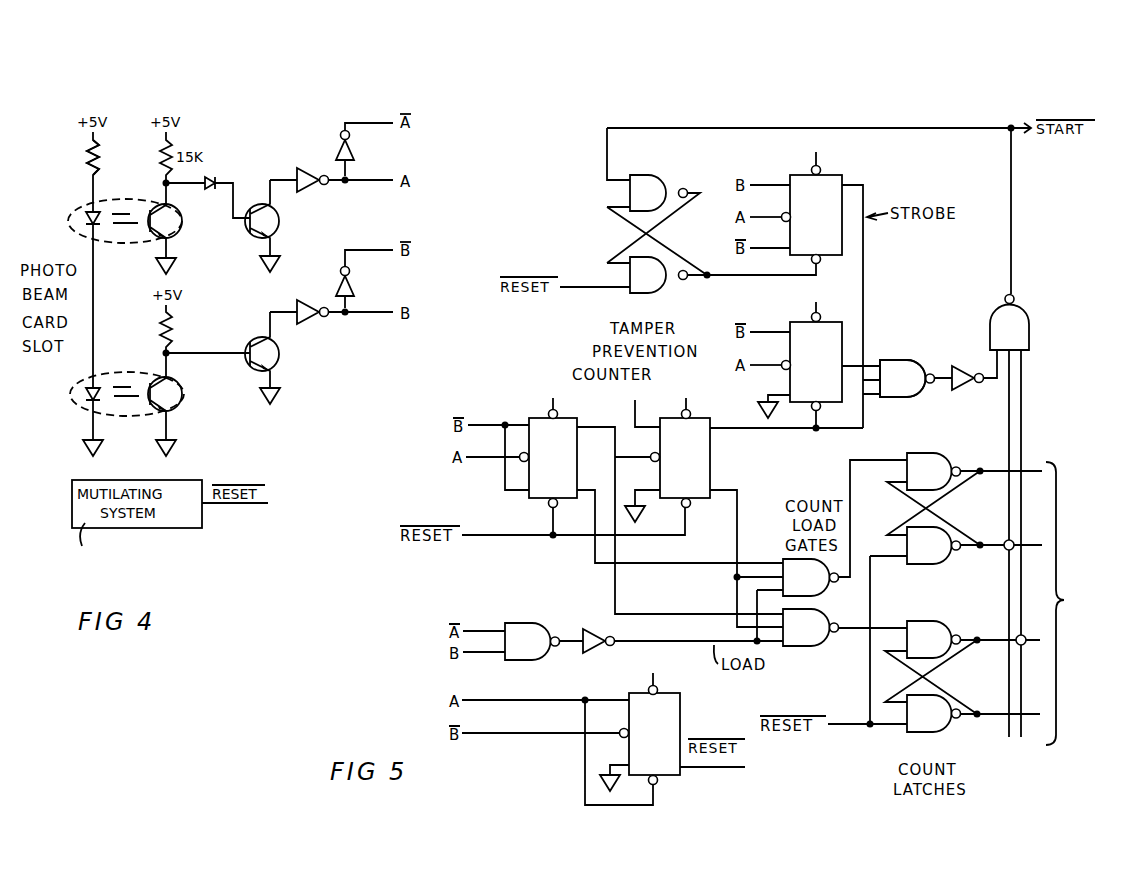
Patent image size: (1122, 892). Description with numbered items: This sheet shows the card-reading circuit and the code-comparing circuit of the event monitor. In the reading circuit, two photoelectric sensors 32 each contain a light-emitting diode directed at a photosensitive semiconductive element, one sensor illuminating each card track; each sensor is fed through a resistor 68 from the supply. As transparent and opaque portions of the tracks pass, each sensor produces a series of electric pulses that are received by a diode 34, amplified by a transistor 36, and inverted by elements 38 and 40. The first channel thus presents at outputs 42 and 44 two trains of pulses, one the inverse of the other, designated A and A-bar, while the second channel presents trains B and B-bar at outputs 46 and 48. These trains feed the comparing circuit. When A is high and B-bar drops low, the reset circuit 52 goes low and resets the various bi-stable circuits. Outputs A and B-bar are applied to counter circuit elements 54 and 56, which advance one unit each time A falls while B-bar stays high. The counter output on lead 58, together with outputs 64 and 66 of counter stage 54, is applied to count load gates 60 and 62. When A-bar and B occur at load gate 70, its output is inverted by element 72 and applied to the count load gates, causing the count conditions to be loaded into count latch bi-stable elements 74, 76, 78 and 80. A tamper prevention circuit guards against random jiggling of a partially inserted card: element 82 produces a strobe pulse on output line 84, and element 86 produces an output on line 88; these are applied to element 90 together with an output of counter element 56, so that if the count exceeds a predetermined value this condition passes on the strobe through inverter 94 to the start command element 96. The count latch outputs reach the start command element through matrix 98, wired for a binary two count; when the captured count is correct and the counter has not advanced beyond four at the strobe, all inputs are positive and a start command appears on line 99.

In FIG. 4, the photoelectric sensor 32 is at (88, 204).
In FIG. 4, the diode 34 is at (214, 176).
In FIG. 4, the transistor 36 is at (279, 228).
In FIG. 4, the inverter element 38 is at (307, 168).
In FIG. 4, the inverter element 40 is at (342, 139).
In FIG. 4, the output 42 is at (362, 183).
In FIG. 4, the output 44 is at (353, 123).
In FIG. 4, the output 46 is at (362, 315).
In FIG. 4, the output 48 is at (372, 248).
In FIG. 4, the resistor 68 is at (103, 157).
In FIG. 5, the reset circuit 52 is at (677, 693).
In FIG. 5, the counter circuit element 54 is at (570, 418).
In FIG. 5, the counter circuit element 56 is at (701, 418).
In FIG. 5, the lead 58 is at (737, 508).
In FIG. 5, the count load gate 60 is at (826, 593).
In FIG. 5, the count load gate 62 is at (793, 647).
In FIG. 5, the output of counter stage 64 is at (696, 563).
In FIG. 5, the output of counter stage 66 is at (650, 614).
In FIG. 5, the load gate 70 is at (530, 623).
In FIG. 5, the inverter element 72 is at (593, 628).
In FIG. 5, the count latch bi-stable element 74 is at (928, 453).
In FIG. 5, the count latch bi-stable element 76 is at (920, 565).
In FIG. 5, the count latch bi-stable element 78 is at (926, 621).
In FIG. 5, the count latch bi-stable element 80 is at (926, 733).
In FIG. 5, the strobe element 82 is at (822, 175).
In FIG. 5, the strobe output line 84 is at (863, 262).
In FIG. 5, the tamper prevention element 86 is at (822, 322).
In FIG. 5, the output line 88 is at (886, 360).
In FIG. 5, the gating element 90 is at (904, 360).
In FIG. 5, the inverter 94 is at (968, 385).
In FIG. 5, the start command element 96 is at (1001, 304).
In FIG. 5, the matrix 98 is at (770, 430).
In FIG. 5, the start command line 99 is at (1011, 208).